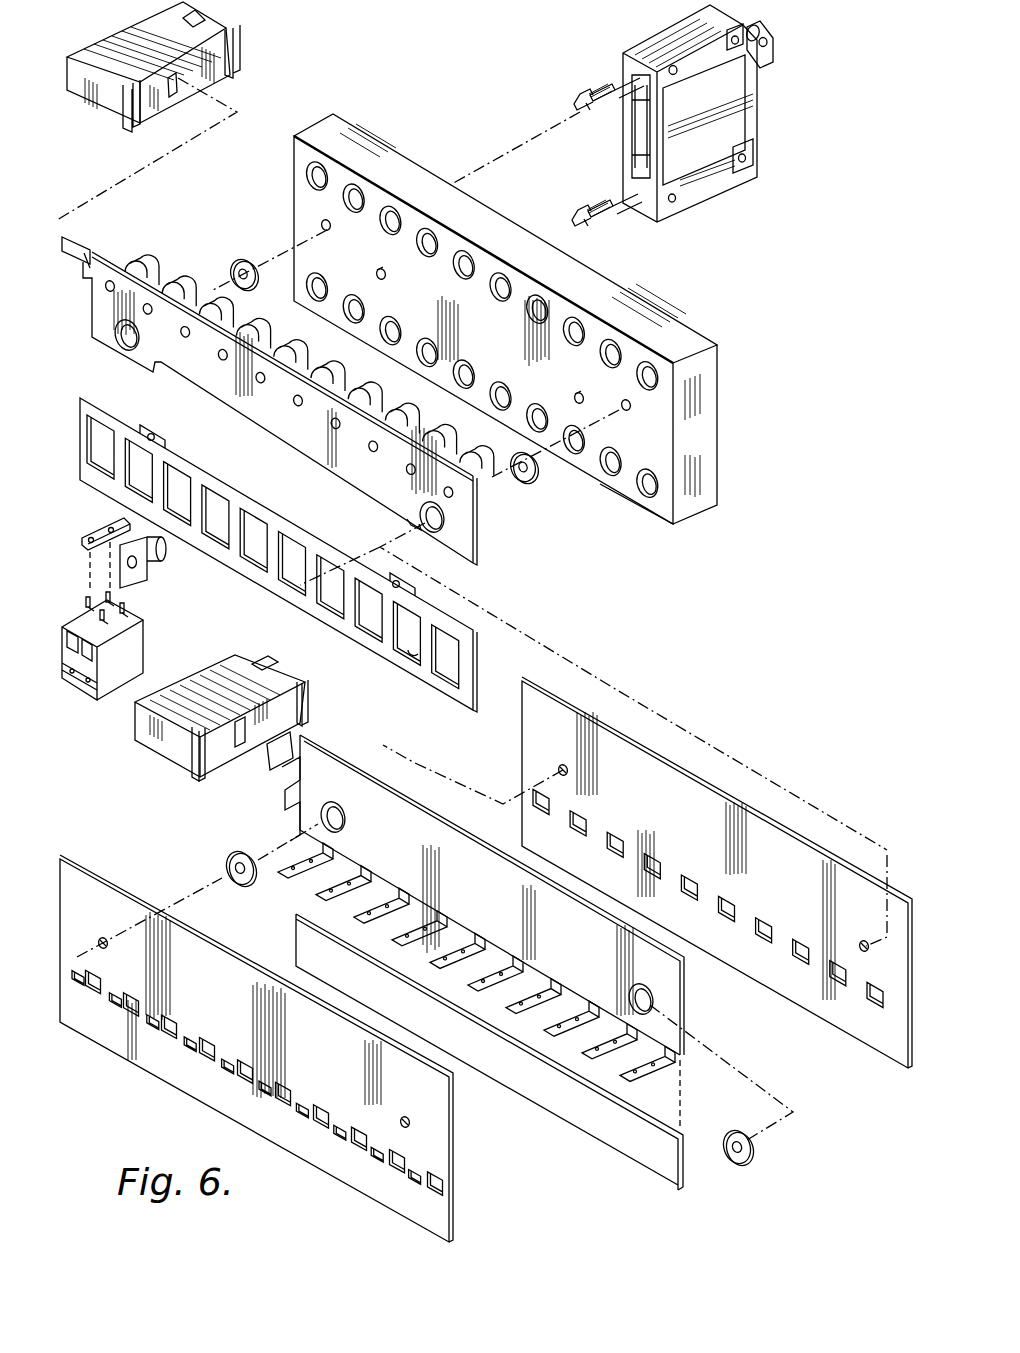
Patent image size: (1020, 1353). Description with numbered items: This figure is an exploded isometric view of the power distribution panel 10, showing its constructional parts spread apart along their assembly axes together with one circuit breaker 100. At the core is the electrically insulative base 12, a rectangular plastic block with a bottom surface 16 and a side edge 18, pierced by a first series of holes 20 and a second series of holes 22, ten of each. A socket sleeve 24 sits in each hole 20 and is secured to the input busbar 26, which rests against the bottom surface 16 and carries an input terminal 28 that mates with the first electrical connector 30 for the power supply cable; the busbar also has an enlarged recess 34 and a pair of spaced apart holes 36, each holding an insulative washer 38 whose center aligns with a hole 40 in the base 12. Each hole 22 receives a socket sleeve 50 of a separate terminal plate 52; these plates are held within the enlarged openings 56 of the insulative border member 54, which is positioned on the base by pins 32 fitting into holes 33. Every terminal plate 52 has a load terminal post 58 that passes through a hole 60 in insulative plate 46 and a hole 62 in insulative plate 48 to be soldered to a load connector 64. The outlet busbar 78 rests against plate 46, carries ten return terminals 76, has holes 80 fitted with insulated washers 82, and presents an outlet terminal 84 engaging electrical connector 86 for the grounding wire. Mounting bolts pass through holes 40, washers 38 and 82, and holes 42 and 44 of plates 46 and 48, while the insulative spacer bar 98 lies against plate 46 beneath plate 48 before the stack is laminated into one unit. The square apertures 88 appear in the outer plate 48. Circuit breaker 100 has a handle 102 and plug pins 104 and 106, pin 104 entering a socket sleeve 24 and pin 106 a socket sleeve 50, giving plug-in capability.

The power distribution panel 10 is at (407, 52).
The electrically insulative base 12 is at (492, 330).
The bottom surface 16 is at (660, 510).
The side edge 18 is at (706, 396).
The first series of holes 20 is at (690, 326).
The second series of holes 22 is at (603, 478).
The socket sleeve 24 is at (481, 492).
The input busbar 26 is at (477, 558).
The input terminal 28 is at (96, 246).
The first electrical connector 30 is at (213, 27).
The pins 32 is at (386, 278).
The holes 33 is at (154, 433).
The enlarged recess 34 is at (303, 416).
The spaced apart holes 36 is at (124, 350).
The insulative washer 38 is at (244, 258).
The hole 40 is at (320, 222).
The holes 42 is at (558, 766).
The holes 44 is at (110, 936).
The insulative plate 46 is at (694, 877).
The insulative plate 48 is at (284, 1052).
The socket sleeve 50 is at (166, 562).
The terminal plate 52 is at (150, 582).
The insulative border member 54 is at (278, 563).
The enlarged openings 56 is at (406, 655).
The load terminal post 58 is at (100, 526).
The hole 60 is at (760, 938).
The hole 62 is at (412, 1182).
The load connector 64 is at (140, 640).
The return terminal 76 is at (280, 896).
The outlet busbar 78 is at (324, 756).
The spaced apart holes 80 is at (320, 819).
The insulated washer 82 is at (230, 856).
The outlet terminal 84 is at (272, 760).
The electrical connector 86 is at (235, 660).
The aperture 88 is at (433, 1196).
The insulative spacer bar 98 is at (651, 1168).
The circuit breaker 100 is at (752, 112).
The handle 102 is at (775, 55).
The pin 104 is at (603, 90).
The pin 106 is at (605, 206).